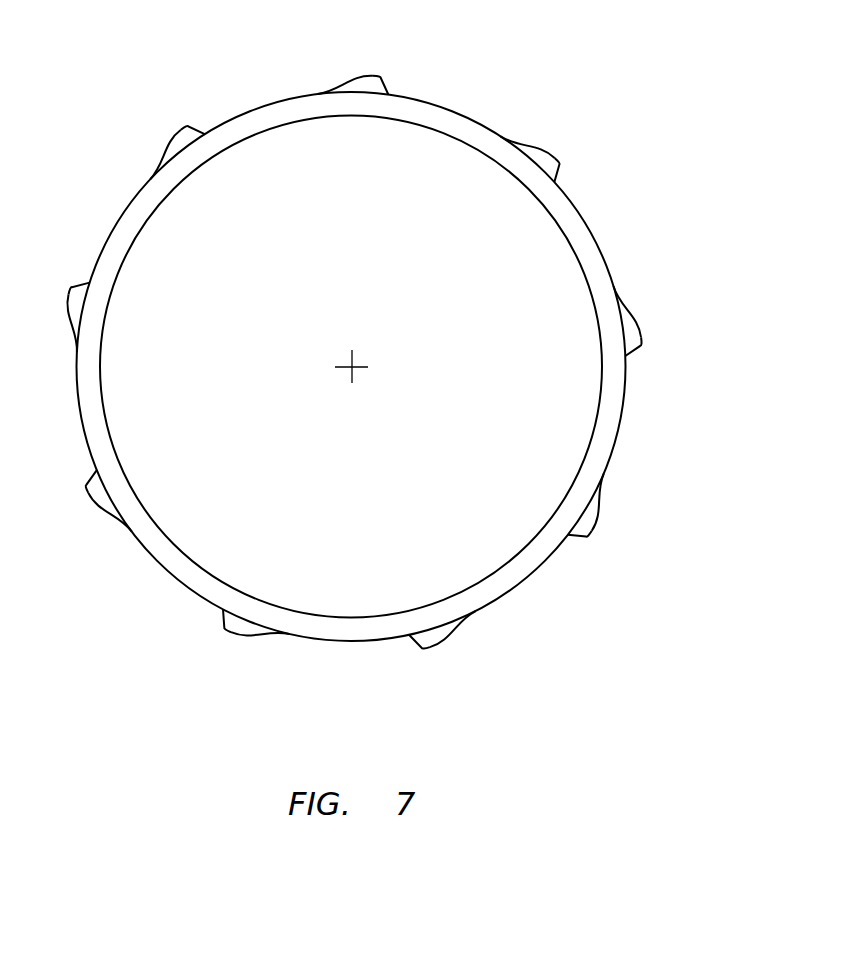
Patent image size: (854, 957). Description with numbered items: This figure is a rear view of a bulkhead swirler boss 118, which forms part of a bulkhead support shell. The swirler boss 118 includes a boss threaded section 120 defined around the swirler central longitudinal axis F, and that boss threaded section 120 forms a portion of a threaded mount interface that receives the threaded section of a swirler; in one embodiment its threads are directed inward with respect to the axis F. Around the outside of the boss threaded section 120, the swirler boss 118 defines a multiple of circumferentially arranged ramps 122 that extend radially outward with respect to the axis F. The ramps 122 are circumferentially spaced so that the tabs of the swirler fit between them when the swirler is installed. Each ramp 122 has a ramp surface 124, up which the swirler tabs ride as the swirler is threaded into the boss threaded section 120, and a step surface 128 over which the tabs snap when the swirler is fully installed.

The swirler boss 118 is at (396, 349).
The boss threaded section 120 is at (498, 162).
The circumferentially arranged ramps 122 is at (362, 349).
The ramp surface 124 is at (524, 137).
The step surface 128 is at (561, 172).
The swirler central longitudinal axis F is at (353, 365).